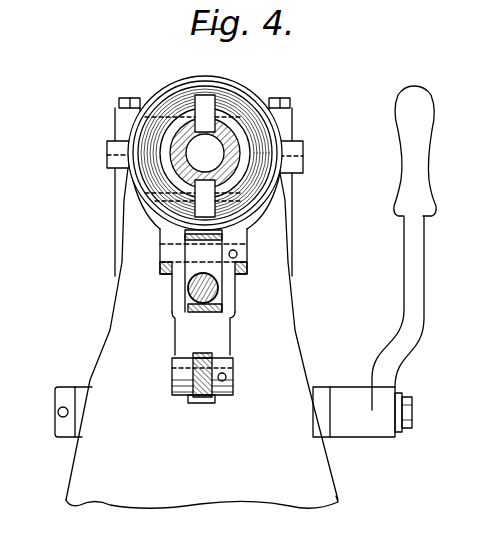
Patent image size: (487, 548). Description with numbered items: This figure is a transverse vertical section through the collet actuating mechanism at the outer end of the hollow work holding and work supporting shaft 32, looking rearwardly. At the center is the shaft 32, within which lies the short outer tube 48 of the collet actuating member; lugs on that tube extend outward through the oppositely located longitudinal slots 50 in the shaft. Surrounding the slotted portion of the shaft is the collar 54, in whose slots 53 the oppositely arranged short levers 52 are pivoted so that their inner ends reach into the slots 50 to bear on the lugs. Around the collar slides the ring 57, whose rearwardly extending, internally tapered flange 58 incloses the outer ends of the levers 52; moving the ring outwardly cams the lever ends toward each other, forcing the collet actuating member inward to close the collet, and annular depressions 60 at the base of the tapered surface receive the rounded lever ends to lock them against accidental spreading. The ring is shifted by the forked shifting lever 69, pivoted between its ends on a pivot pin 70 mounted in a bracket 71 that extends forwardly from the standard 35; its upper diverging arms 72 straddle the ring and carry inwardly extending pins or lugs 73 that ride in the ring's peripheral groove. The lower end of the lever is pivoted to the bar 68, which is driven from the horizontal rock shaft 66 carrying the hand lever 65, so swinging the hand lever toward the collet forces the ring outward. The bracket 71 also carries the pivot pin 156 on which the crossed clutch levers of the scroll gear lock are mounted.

The hollow work holding and work supporting shaft 32 is at (228, 131).
The standard 35 is at (284, 270).
The short outer tube of collet actuating member 48 is at (225, 156).
The longitudinal slots 50 is at (220, 133).
The short levers 52 is at (203, 100).
The slots in collar 53 is at (180, 192).
The collar 54 is at (180, 123).
The ring 57 is at (217, 127).
The flange 58 is at (138, 125).
The annular depressions 60 is at (241, 194).
The hand lever 65 is at (413, 268).
The rock shaft 66 is at (414, 411).
The bar 68 is at (172, 376).
The forked shifting lever 69 is at (184, 330).
The pivot pin 70 is at (173, 259).
The bracket 71 is at (196, 241).
The diverging arms 72 is at (123, 187).
The pins or lugs 73 is at (127, 167).
The pivot pin 156 is at (186, 290).